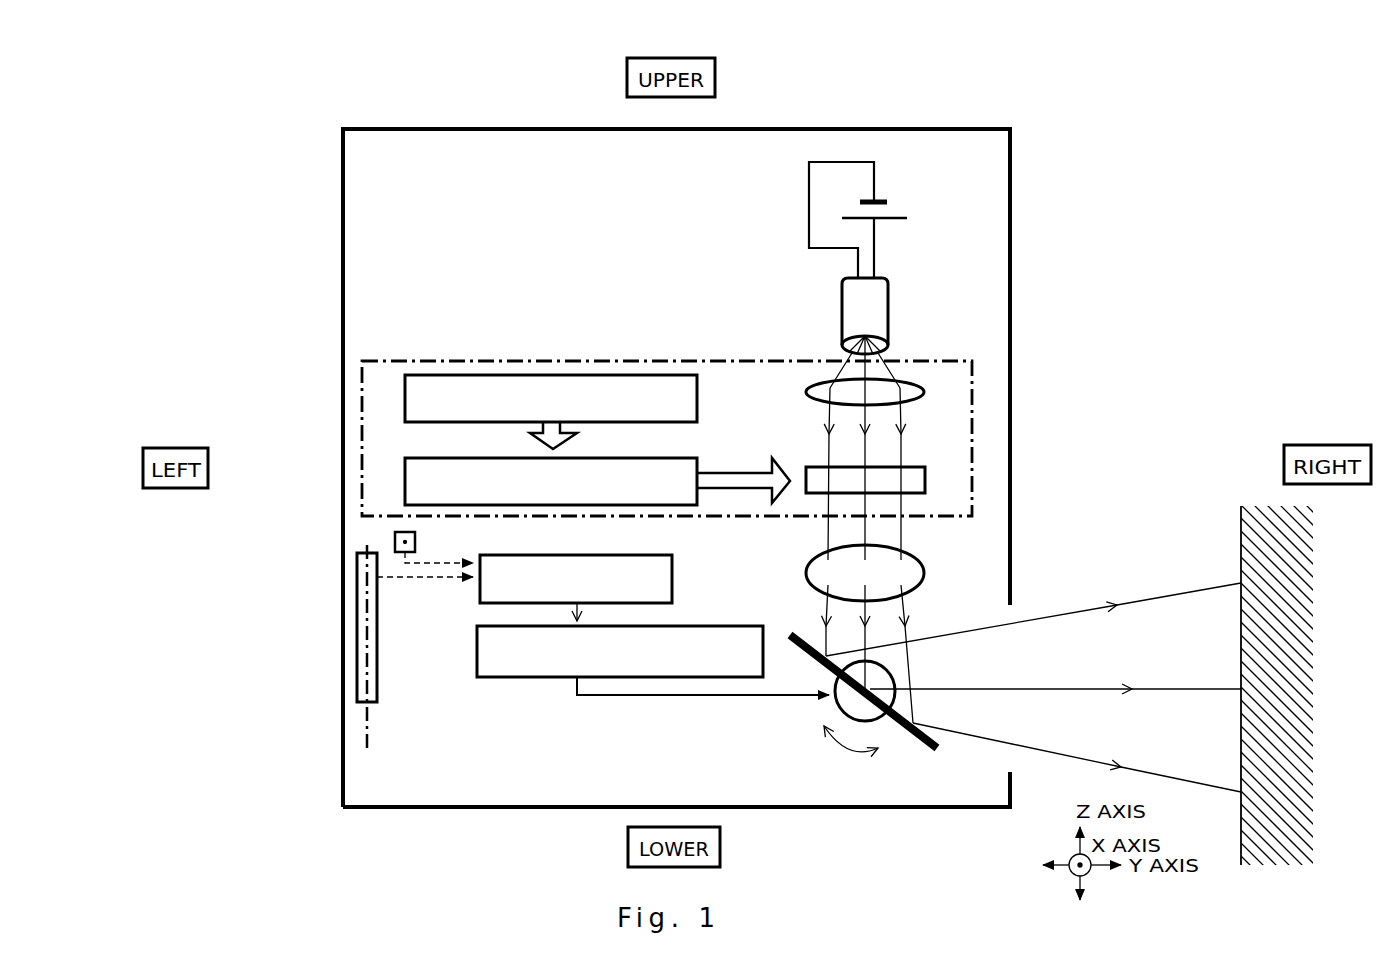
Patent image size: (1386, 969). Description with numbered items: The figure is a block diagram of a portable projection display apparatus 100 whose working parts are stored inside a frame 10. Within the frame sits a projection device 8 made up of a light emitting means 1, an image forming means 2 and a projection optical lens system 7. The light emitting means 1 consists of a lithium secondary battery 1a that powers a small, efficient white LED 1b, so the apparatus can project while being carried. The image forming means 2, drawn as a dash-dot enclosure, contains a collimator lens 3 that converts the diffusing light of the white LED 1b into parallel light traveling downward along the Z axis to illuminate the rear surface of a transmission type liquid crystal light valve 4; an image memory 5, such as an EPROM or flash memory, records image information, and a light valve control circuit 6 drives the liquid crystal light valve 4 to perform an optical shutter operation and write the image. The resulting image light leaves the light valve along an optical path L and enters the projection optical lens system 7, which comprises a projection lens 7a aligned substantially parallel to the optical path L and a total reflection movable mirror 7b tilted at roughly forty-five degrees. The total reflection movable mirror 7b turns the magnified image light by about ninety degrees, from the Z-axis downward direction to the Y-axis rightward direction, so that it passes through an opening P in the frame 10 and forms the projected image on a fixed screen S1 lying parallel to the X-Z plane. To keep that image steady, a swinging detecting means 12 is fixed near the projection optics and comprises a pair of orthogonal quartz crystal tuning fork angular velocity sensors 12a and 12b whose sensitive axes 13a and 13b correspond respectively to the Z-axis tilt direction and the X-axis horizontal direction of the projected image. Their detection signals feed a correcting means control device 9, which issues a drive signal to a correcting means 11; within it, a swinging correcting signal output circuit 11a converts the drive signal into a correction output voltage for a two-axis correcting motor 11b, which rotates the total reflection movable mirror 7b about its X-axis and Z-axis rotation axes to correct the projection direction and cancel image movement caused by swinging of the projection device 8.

The projection display apparatus 100 is at (676, 428).
The frame 10 is at (900, 129).
The light emitting means 1 is at (984, 258).
The lithium secondary battery 1a is at (900, 207).
The white LED 1b is at (888, 313).
The image forming means 2 is at (975, 361).
The collimator lens 3 is at (922, 392).
The optical path L is at (865, 455).
The liquid crystal light valve 4 is at (925, 480).
The image memory 5 is at (405, 402).
The light valve control circuit 6 is at (405, 487).
The projection optical lens system 7 is at (964, 643).
The projection lens 7a is at (925, 573).
The total reflection movable mirror 7b is at (900, 717).
The projection device 8 is at (820, 340).
The opening P is at (1013, 654).
The screen S1 is at (1286, 693).
The correcting means control device 9 is at (477, 588).
The correcting means 11 is at (630, 749).
The swinging correcting signal output circuit 11a is at (533, 677).
The two-axis correcting motor 11b is at (830, 702).
The swinging detecting means 12 is at (307, 612).
The angular velocity sensor 12a is at (357, 688).
The angular velocity sensor 12b is at (332, 540).
The angular velocity sensitive axis 13a is at (372, 720).
The angular velocity sensitive axis 13b is at (417, 542).